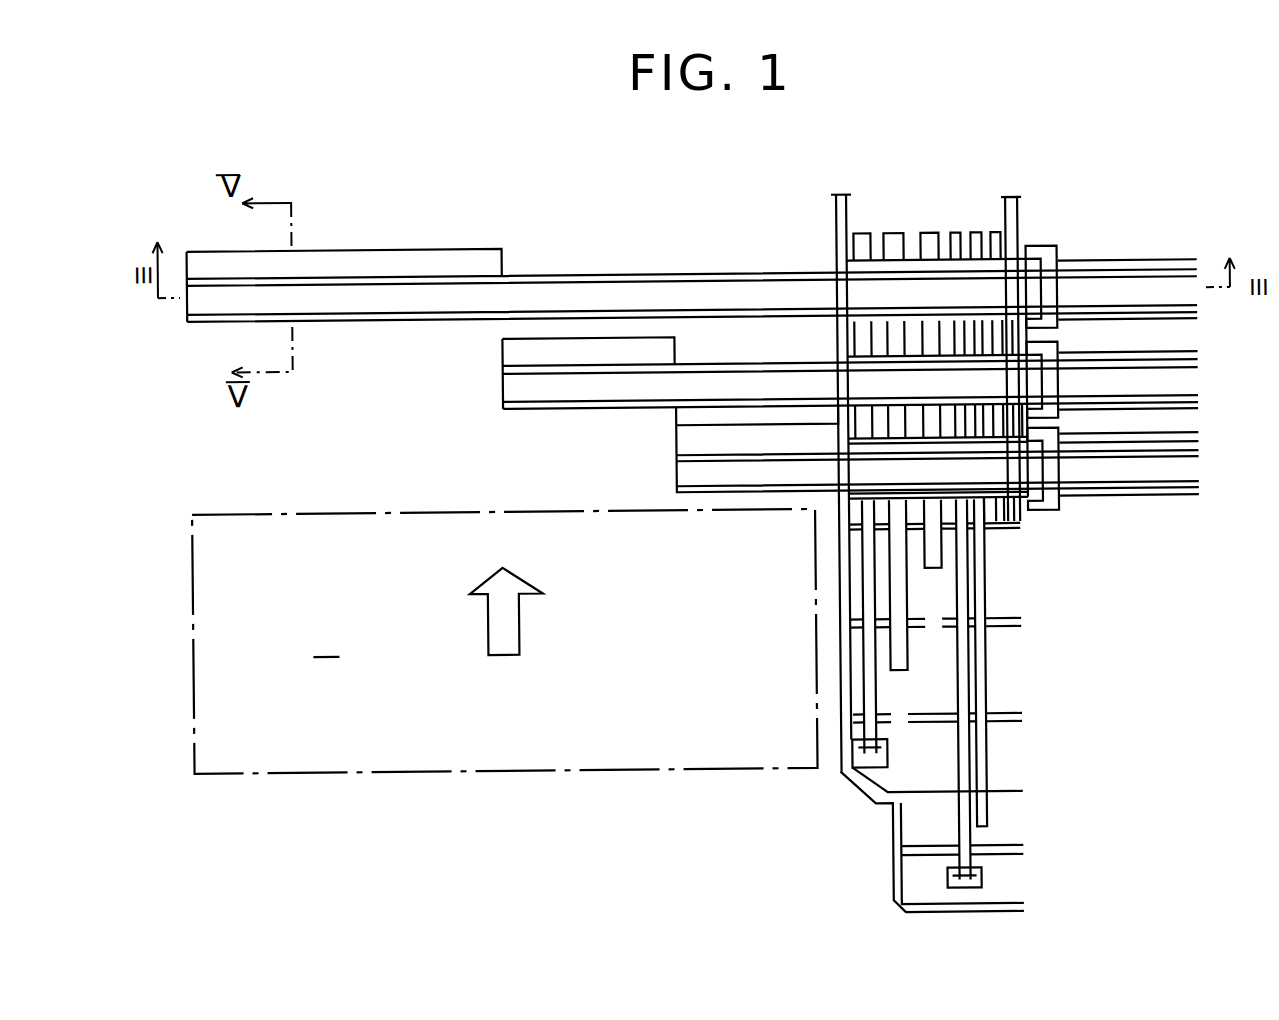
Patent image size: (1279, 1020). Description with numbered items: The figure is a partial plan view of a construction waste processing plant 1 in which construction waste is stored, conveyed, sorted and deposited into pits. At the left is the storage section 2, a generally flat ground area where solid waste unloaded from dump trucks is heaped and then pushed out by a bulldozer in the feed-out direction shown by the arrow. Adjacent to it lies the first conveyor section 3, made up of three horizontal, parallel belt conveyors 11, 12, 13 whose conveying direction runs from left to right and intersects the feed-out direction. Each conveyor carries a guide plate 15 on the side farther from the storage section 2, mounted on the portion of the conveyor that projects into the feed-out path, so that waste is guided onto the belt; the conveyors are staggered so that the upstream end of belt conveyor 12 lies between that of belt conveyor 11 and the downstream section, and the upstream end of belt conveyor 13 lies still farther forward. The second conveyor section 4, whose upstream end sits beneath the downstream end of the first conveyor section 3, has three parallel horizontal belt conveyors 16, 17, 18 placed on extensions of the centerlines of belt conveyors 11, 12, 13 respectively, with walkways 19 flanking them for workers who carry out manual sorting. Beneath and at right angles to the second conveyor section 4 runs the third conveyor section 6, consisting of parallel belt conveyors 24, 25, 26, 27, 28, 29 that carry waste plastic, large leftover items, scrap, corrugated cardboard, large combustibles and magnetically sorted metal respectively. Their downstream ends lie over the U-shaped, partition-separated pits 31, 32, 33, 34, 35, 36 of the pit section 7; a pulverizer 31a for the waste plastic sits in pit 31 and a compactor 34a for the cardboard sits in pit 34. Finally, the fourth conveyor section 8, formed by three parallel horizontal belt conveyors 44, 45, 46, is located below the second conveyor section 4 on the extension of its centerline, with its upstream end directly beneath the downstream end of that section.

The construction waste processing plant 1 is at (692, 811).
The storage section 2 is at (383, 770).
The first conveyor section 3 is at (418, 342).
The second conveyor section 4 is at (828, 214).
The third conveyor section 6 is at (1005, 130).
The pit section 7 is at (1088, 906).
The fourth conveyor section 8 is at (1205, 194).
The belt conveyor 11 is at (446, 295).
The belt conveyor 12 is at (513, 385).
The belt conveyor 13 is at (684, 472).
The guide plate 15 is at (494, 248).
The belt conveyor 16 is at (856, 298).
The belt conveyor 17 is at (850, 381).
The belt conveyor 18 is at (861, 476).
The walkway 19 is at (909, 264).
The belt conveyor 24 is at (862, 233).
The belt conveyor 25 is at (892, 234).
The belt conveyor 26 is at (927, 234).
The belt conveyor 27 is at (954, 234).
The belt conveyor 28 is at (972, 234).
The belt conveyor 29 is at (995, 234).
The waste plastic pit 31 is at (994, 760).
The pulverizer 31a is at (859, 754).
The disposal pit 32 is at (994, 671).
The disposal pit 33 is at (995, 590).
The waste corrugated cardboard pit 34 is at (980, 884).
The compactor 34a is at (940, 882).
The disposal pit 35 is at (993, 826).
The disposal pit 36 is at (984, 523).
The belt conveyor 44 is at (1084, 287).
The belt conveyor 45 is at (1097, 377).
The belt conveyor 46 is at (1114, 466).